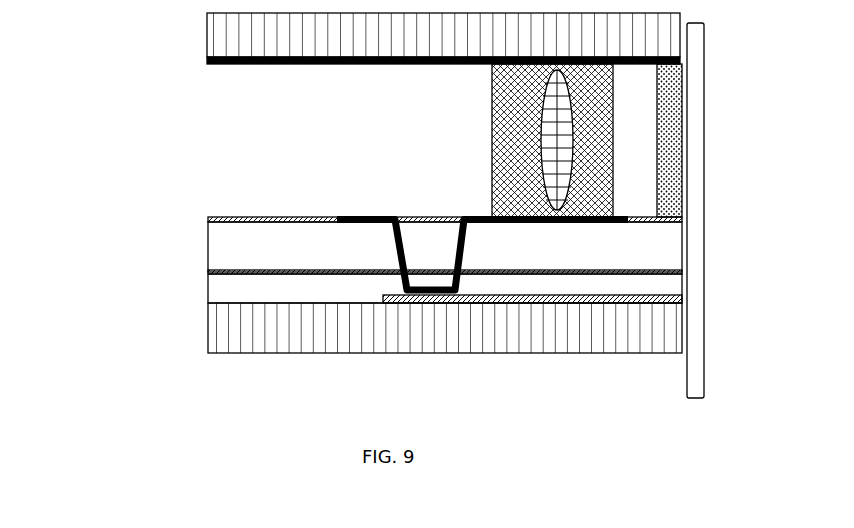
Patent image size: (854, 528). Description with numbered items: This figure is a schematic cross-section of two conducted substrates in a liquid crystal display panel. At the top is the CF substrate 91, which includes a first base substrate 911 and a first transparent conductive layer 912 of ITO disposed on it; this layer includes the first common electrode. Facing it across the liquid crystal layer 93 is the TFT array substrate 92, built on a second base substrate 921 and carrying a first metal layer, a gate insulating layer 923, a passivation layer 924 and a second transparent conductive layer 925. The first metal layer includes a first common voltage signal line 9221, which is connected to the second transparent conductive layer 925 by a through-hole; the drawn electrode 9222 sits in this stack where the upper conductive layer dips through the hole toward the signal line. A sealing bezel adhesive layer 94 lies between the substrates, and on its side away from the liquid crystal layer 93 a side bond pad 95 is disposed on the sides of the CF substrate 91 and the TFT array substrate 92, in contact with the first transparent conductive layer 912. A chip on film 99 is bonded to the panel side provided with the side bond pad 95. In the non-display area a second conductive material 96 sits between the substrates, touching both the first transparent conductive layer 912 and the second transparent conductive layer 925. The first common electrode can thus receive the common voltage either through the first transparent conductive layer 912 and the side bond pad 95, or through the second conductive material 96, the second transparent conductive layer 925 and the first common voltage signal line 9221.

The CF substrate 91 is at (366, 43).
The first base substrate 911 is at (207, 37).
The first transparent conductive layer 912 is at (207, 61).
The TFT array substrate 92 is at (367, 302).
The second base substrate 921 is at (416, 328).
The first common voltage signal line 9221 is at (562, 303).
The pixel electrode 9222 is at (428, 260).
The gate insulating layer 923 is at (208, 290).
The passivation layer 924 is at (208, 250).
The second transparent conductive layer 925 is at (208, 219).
The liquid crystal layer 93 is at (278, 141).
The sealing bezel adhesive layer 94 is at (500, 166).
The side bond pad 95 is at (675, 115).
The second conductive material 96 is at (545, 109).
The chip on film 99 is at (702, 210).